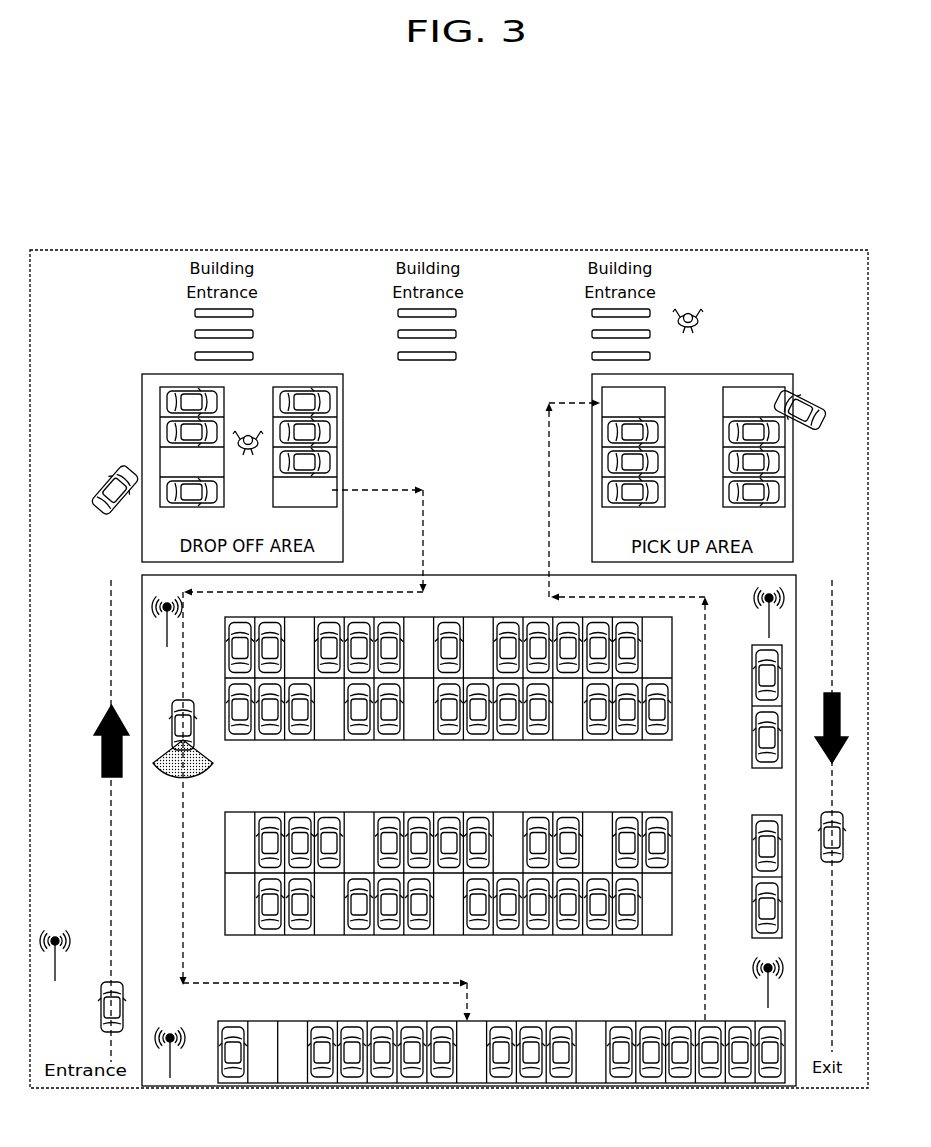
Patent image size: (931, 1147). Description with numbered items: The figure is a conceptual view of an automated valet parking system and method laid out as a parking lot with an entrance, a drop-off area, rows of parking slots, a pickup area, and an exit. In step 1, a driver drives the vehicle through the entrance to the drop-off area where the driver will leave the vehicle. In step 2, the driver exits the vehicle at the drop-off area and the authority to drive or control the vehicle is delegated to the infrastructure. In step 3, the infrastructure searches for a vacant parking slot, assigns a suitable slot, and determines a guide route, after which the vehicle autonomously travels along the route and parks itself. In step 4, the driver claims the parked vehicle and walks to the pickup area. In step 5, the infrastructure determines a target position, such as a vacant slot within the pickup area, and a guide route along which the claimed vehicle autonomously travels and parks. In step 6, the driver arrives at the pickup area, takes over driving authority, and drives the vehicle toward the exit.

The step of driving to drop-off area 1 is at (98, 821).
The step of exiting vehicle and delegating authority 2 is at (248, 426).
The step of searching and assigning parking slot 3 is at (184, 724).
The step of claiming vehicle and walking to pickup area 4 is at (704, 321).
The step of determining target position and guide route 5 is at (642, 710).
The step of taking over vehicle and driving to exit 6 is at (809, 407).